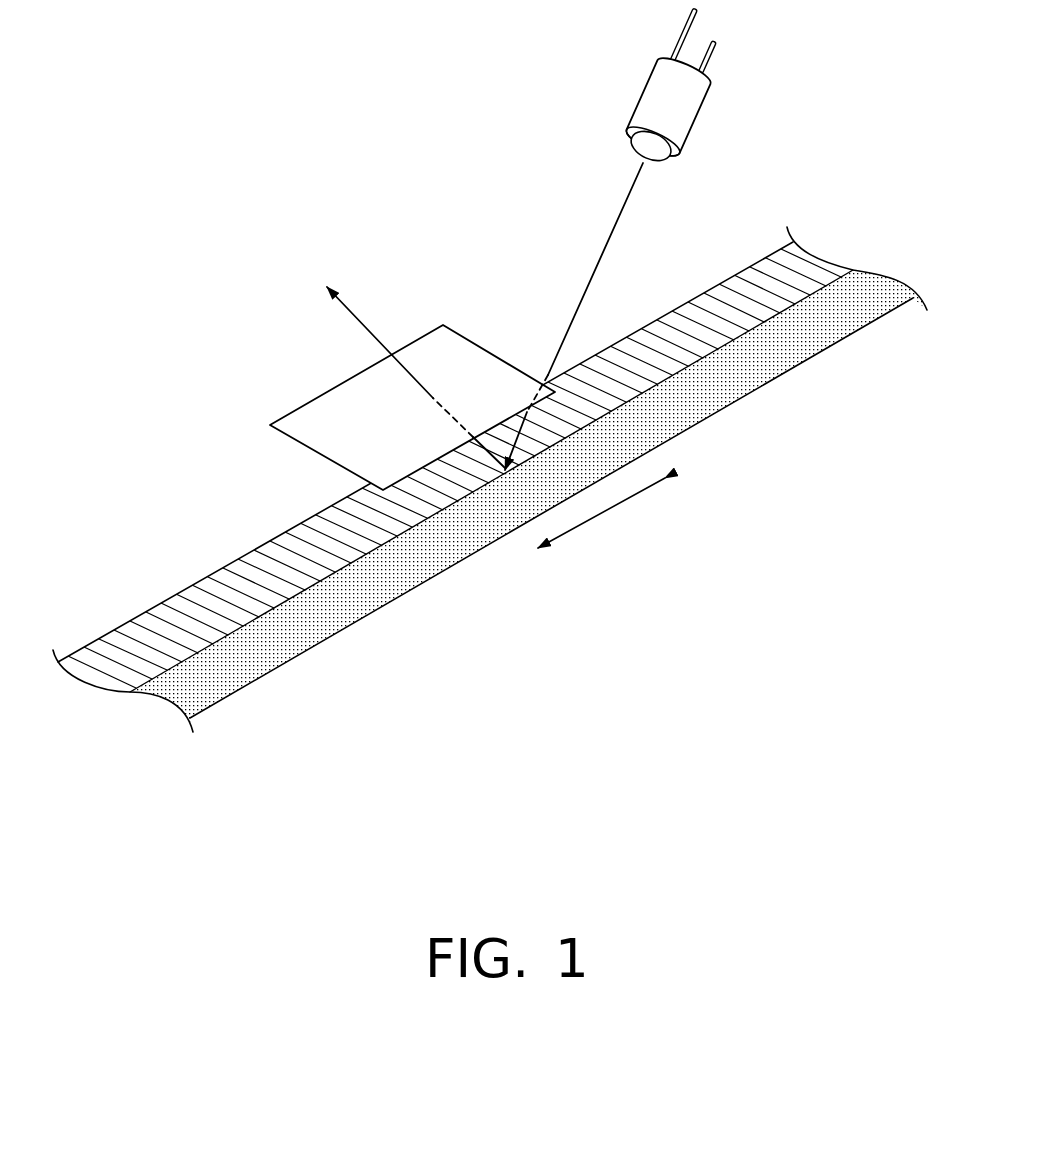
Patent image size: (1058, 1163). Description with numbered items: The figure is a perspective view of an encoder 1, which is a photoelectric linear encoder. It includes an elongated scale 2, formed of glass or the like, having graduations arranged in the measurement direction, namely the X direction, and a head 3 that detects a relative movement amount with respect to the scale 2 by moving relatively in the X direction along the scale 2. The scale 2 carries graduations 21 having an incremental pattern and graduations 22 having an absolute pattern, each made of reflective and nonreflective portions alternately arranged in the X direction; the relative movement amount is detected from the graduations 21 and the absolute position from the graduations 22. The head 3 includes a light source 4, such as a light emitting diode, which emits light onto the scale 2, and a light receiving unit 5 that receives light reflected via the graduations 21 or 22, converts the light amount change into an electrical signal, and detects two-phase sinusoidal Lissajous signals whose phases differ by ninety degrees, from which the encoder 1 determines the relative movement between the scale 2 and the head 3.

The encoder 1 is at (502, 247).
The scale 2 is at (503, 475).
The graduations having an incremental pattern 21 is at (812, 262).
The graduations having an absolute pattern 22 is at (887, 282).
The head 3 is at (450, 247).
The light source 4 is at (643, 92).
The light receiving unit 5 is at (295, 408).
The X direction X is at (601, 513).